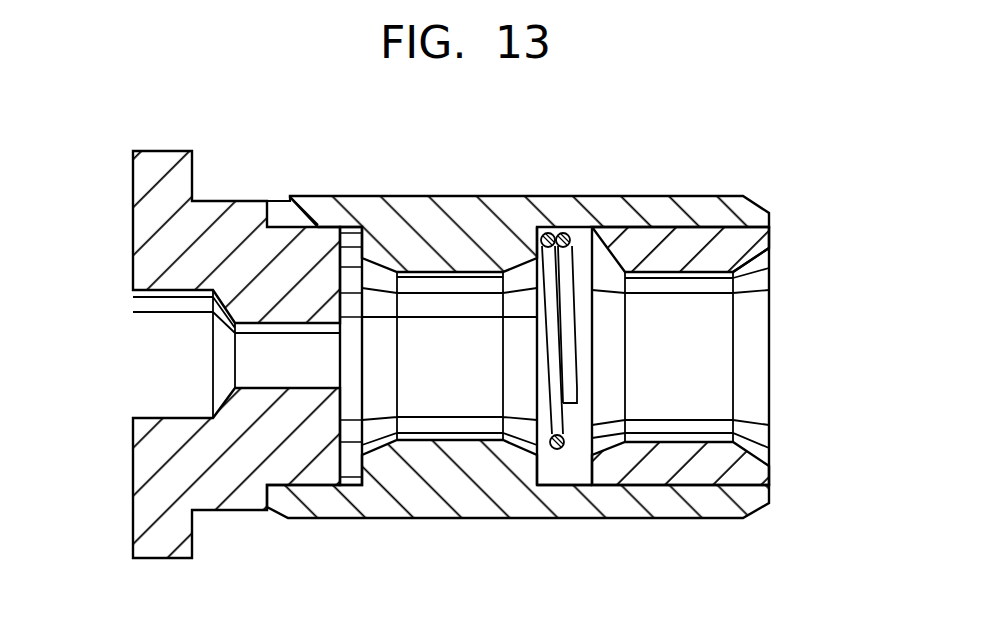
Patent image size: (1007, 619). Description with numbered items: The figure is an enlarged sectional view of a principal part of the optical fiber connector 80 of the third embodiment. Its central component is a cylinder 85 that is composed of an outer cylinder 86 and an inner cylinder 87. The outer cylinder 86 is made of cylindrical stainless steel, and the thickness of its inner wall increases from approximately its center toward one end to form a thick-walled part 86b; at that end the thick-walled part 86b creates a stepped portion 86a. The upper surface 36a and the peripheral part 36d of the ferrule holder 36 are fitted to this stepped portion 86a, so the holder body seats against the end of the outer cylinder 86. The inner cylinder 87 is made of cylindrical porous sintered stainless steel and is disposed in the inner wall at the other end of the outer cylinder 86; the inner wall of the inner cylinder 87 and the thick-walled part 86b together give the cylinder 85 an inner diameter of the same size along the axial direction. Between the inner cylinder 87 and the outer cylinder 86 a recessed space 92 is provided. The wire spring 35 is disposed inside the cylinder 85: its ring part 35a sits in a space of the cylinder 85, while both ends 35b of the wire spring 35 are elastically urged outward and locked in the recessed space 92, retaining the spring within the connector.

The ferrule holder 36 is at (143, 226).
The upper surface 36a is at (362, 418).
The peripheral part 36d is at (288, 224).
The optical fiber connector 80 is at (414, 188).
The cylinder 85 is at (565, 192).
The outer cylinder 86 is at (698, 205).
The stepped portion 86a is at (300, 232).
The thick-walled part 86b is at (470, 262).
The inner cylinder 87 is at (753, 250).
The wire spring 35 is at (607, 419).
The ring part 35a is at (567, 303).
The ends 35b is at (553, 450).
The recessed space 92 is at (578, 472).